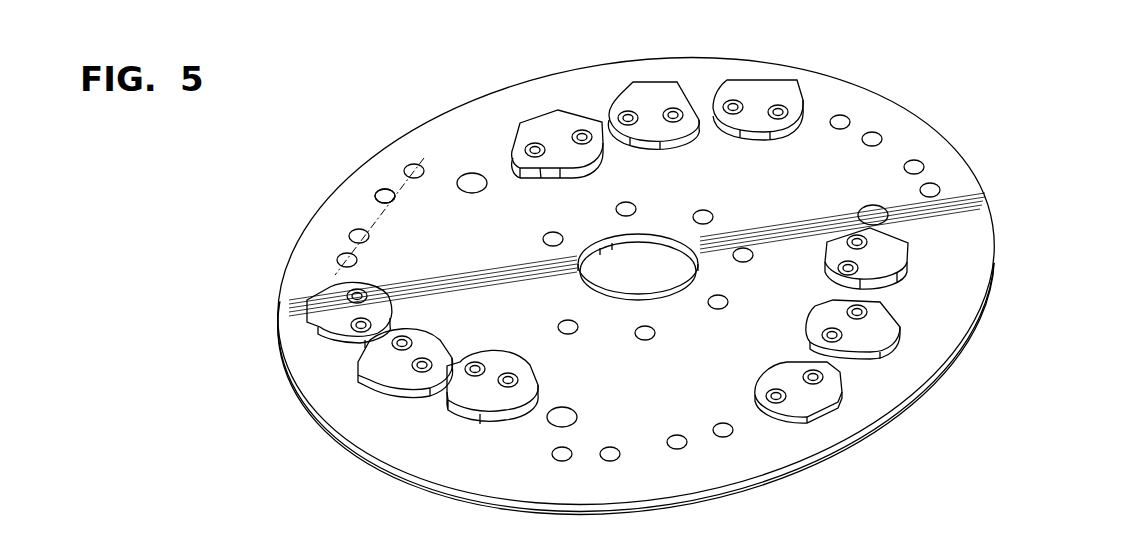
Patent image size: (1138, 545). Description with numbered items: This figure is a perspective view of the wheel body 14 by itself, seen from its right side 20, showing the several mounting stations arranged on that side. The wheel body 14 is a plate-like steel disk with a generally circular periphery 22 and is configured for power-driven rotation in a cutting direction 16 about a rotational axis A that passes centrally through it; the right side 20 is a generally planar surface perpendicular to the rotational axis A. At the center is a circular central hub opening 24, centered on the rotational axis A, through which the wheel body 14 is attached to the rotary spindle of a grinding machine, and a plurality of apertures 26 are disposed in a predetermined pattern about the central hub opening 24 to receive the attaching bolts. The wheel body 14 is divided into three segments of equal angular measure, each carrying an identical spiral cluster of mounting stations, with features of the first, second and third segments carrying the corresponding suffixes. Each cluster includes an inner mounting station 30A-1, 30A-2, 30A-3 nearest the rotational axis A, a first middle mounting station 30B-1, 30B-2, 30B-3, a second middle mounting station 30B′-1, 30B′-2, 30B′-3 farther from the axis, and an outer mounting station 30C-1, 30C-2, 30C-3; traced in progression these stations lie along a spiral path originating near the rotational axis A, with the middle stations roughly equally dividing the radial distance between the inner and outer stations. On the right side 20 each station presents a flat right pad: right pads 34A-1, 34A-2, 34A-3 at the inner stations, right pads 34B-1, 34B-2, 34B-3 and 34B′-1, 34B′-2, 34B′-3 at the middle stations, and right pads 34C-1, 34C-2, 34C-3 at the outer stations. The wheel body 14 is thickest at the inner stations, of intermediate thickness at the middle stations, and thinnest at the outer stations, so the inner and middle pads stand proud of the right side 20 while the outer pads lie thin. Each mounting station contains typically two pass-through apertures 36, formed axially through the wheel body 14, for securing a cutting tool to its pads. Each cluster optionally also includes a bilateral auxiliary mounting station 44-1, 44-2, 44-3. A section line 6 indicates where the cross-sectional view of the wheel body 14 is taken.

The wheel body 14 is at (893, 100).
The cutting direction 16 is at (1036, 372).
The right side 20 is at (809, 192).
The periphery 22 is at (972, 318).
The central hub opening 24 is at (663, 246).
The apertures 26 is at (543, 238).
The apertures 36 is at (582, 141).
The section line 6 is at (438, 152).
The rotational axis A is at (597, 41).
The inner mounting station 30A-1 is at (908, 242).
The inner mounting station 30A-2 is at (530, 113).
The inner mounting station 30A-3 is at (454, 412).
The first middle mounting station 30B-1 is at (897, 318).
The first middle mounting station 30B-2 is at (659, 80).
The first middle mounting station 30B-3 is at (362, 376).
The second middle mounting station 30B′-1 is at (845, 382).
The second middle mounting station 30B′-2 is at (782, 78).
The second middle mounting station 30B′-3 is at (303, 321).
The outer mounting station 30C-1 is at (616, 466).
The outer mounting station 30C-2 is at (937, 165).
The outer mounting station 30C-3 is at (381, 172).
The right pad 34A-1 is at (880, 257).
The right pad 34A-2 is at (547, 123).
The right pad 34A-3 is at (500, 371).
The right pad 34B-1 is at (838, 313).
The right pad 34B-2 is at (647, 120).
The right pad 34B-3 is at (428, 347).
The right pad 34B′-1 is at (787, 377).
The right pad 34B′-2 is at (752, 118).
The right pad 34B′-3 is at (378, 298).
The right pad 34C-1 is at (587, 444).
The right pad 34C-2 is at (945, 173).
The right pad 34C-3 is at (408, 190).
The auxiliary mounting station 44-1 is at (736, 442).
The auxiliary mounting station 44-2 is at (857, 116).
The auxiliary mounting station 44-3 is at (332, 237).